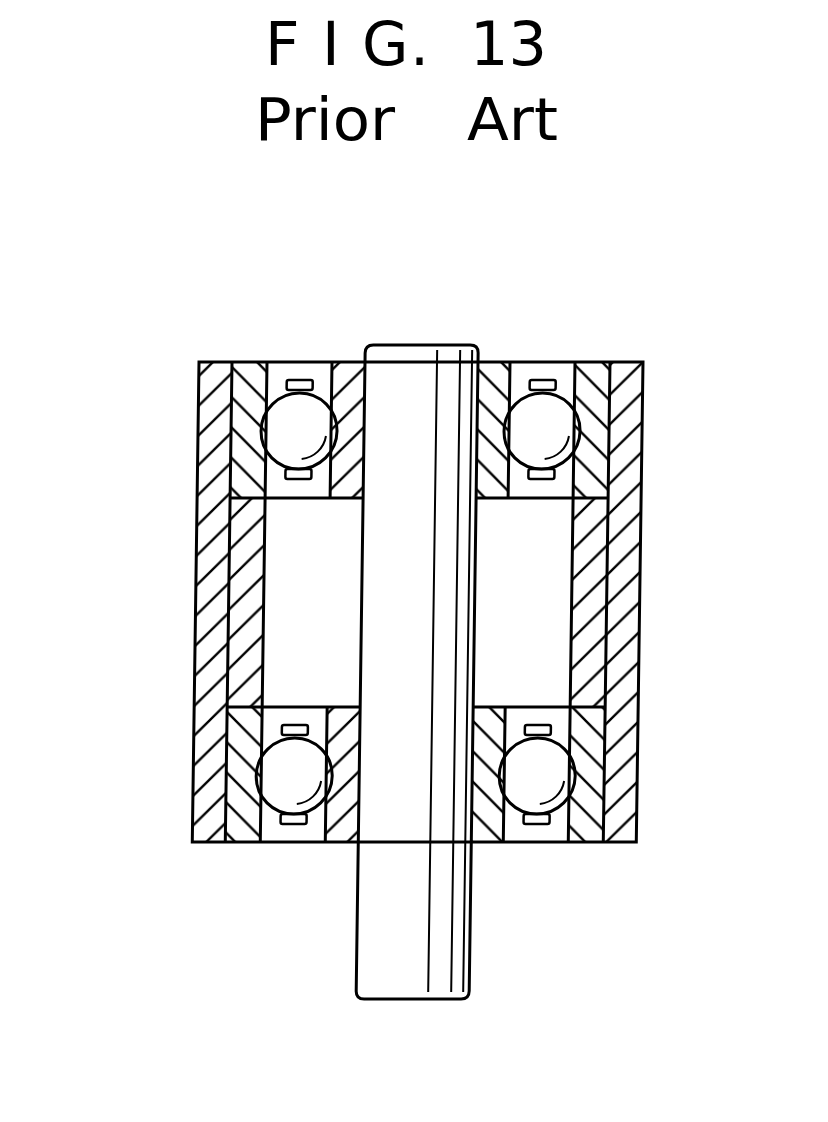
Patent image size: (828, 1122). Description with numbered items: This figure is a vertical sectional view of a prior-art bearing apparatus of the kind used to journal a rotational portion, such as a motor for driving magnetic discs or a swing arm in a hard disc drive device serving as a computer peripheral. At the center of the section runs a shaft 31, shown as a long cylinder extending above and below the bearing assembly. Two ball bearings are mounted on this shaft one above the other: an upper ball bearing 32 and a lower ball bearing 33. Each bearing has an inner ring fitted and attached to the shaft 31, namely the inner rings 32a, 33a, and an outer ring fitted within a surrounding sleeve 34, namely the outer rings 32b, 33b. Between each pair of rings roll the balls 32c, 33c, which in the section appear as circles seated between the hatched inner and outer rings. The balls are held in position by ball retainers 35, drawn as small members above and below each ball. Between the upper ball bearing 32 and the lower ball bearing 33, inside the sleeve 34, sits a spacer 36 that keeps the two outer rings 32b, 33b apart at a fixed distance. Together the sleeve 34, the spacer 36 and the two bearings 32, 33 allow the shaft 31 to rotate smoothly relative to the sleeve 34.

The shaft 31 is at (398, 373).
The upper ball bearing 32 is at (338, 355).
The inner ring 32a is at (352, 377).
The outer ring 32b is at (250, 380).
The balls 32c is at (282, 412).
The lower ball bearing 33 is at (334, 850).
The inner ring 33a is at (345, 828).
The outer ring 33b is at (240, 828).
The balls 33c is at (275, 777).
The sleeve 34 is at (202, 647).
The ball retainers 35 is at (553, 390).
The spacer 36 is at (242, 558).